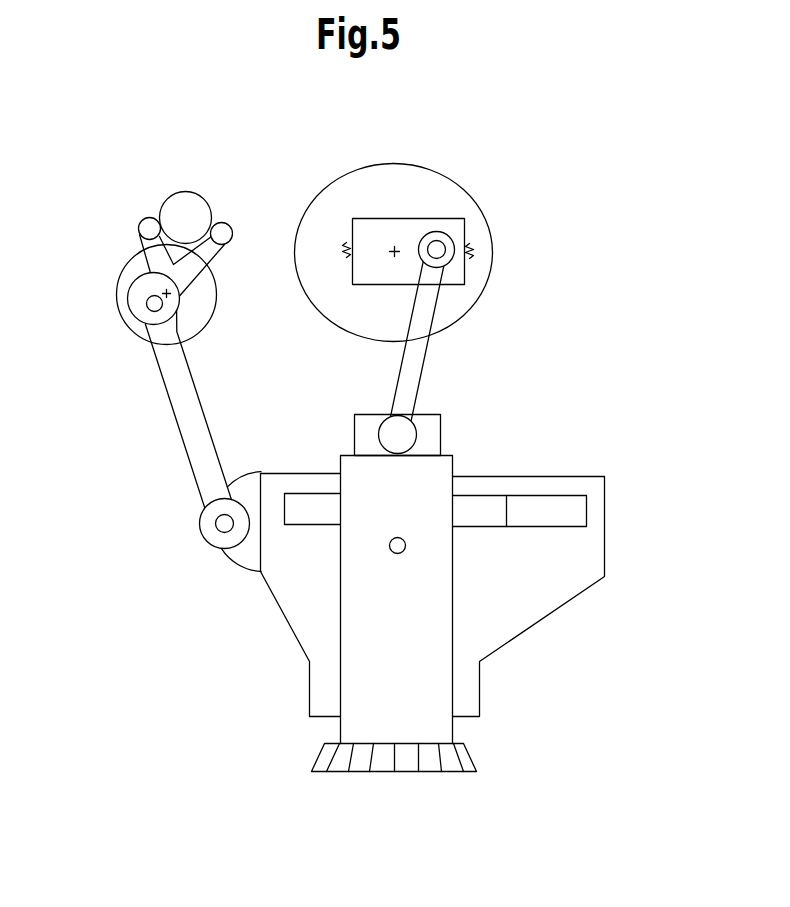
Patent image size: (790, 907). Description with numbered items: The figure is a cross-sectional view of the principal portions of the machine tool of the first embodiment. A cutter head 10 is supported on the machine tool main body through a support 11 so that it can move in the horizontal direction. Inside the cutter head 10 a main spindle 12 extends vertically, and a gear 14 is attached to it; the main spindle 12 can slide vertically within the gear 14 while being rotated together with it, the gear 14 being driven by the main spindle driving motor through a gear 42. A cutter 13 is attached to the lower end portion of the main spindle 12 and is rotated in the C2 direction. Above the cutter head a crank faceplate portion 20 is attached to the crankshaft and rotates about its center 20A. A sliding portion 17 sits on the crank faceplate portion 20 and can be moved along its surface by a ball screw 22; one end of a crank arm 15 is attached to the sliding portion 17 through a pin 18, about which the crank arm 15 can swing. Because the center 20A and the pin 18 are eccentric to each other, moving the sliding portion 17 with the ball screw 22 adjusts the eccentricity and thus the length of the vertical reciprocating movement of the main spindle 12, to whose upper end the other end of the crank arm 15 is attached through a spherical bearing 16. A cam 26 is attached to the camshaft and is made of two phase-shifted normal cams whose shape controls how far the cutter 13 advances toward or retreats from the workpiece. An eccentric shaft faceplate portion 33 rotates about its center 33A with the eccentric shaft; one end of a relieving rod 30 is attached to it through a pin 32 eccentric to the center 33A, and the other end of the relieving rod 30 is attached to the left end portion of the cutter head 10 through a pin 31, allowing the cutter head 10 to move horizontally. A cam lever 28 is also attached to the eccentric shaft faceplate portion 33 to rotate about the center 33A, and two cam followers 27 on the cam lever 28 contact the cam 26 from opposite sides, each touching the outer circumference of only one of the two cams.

The cutter head 10 is at (590, 559).
The support 11 is at (401, 551).
The main spindle 12 is at (432, 663).
The cutter 13 is at (460, 760).
The gear 14 is at (482, 492).
The crank arm 15 is at (410, 373).
The spherical bearing 16 is at (440, 435).
The sliding portion 17 is at (456, 225).
The pin 18 is at (438, 253).
The crank faceplate portion 20 is at (453, 177).
The center of the crank faceplate portion 20A is at (390, 250).
The ball screw 22 is at (475, 250).
The cam 26 is at (173, 198).
The cam followers 27 is at (135, 225).
The cam lever 28 is at (140, 243).
The relieving rod 30 is at (185, 412).
The pin 31 is at (207, 525).
The pin 32 is at (145, 303).
The eccentric shaft faceplate portion 33 is at (115, 293).
The center of the eccentric shaft faceplate portion 33A is at (175, 300).
The gear 42 is at (548, 492).